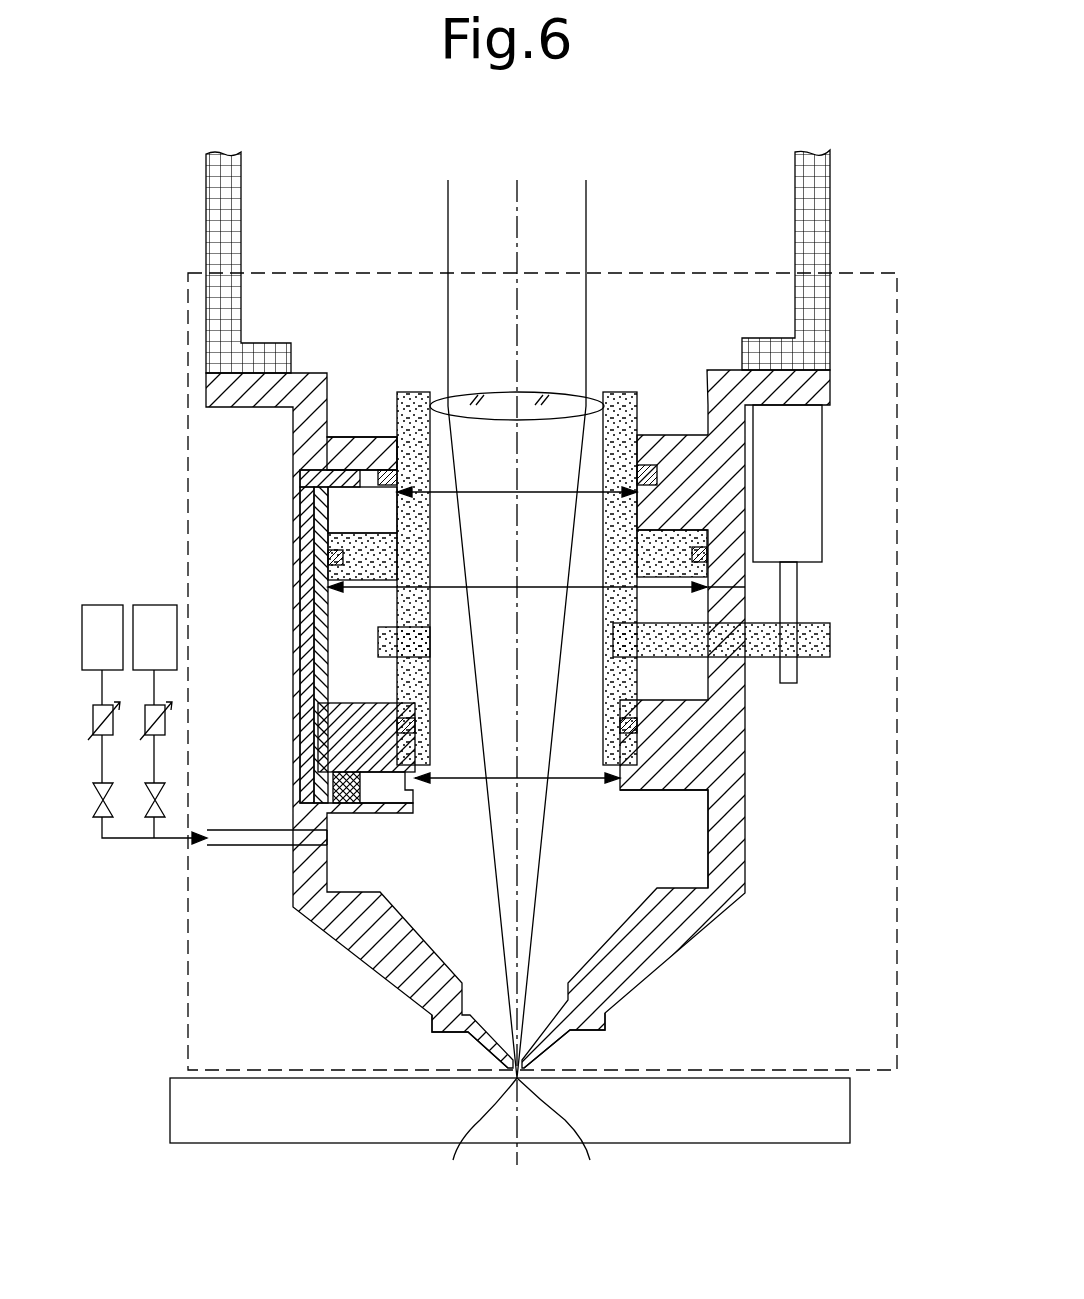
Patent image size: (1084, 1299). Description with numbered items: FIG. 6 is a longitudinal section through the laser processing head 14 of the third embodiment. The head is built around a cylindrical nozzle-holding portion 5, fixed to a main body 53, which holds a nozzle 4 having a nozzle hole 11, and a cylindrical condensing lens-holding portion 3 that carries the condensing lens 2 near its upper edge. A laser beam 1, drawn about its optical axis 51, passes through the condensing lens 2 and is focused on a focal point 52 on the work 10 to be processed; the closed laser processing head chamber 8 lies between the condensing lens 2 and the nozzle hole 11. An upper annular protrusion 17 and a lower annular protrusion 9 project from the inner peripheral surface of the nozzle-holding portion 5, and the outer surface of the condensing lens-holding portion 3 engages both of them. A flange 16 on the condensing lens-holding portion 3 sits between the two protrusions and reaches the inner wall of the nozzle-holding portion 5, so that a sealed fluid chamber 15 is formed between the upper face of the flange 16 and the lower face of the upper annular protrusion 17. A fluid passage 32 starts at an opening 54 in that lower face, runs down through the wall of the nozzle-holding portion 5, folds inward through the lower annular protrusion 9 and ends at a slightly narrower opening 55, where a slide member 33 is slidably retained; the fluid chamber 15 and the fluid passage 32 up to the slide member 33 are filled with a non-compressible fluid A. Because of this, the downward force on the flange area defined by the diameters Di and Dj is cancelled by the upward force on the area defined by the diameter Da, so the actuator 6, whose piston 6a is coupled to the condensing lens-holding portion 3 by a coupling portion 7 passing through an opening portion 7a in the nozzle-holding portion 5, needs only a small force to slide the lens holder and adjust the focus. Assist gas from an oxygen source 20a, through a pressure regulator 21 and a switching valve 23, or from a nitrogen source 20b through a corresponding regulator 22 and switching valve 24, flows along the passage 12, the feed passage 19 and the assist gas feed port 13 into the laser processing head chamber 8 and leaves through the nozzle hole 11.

The laser beam 1 is at (586, 205).
The condensing lens 2 is at (548, 395).
The condensing lens-holding portion 3 is at (618, 395).
The nozzle 4 is at (585, 1030).
The nozzle-holding portion 5 is at (727, 927).
The actuator 6 is at (800, 440).
The piston 6a is at (790, 600).
The coupling portion 7 is at (820, 640).
The opening portion 7a is at (715, 597).
The laser processing head chamber 8 is at (680, 860).
The lower annular protrusion 9 is at (360, 720).
The to-be-processed work 10 is at (672, 1125).
The nozzle hole 11 is at (477, 1137).
The passage 12 is at (154, 849).
The assist gas feed port 13 is at (322, 845).
The laser processing head 14 is at (542, 671).
The fluid chamber 15 is at (392, 534).
The flange 16 is at (672, 547).
The upper annular protrusion 17 is at (370, 440).
The feed passage 19 is at (218, 848).
The assist gas source 20a is at (100, 605).
The assist gas source 20b is at (156, 605).
The pressure regulator 21 is at (92, 722).
The flow control valve 22 is at (144, 722).
The switching valve 23 is at (92, 800).
The switching valve 24 is at (144, 800).
The fluid passage 32 is at (308, 555).
The slide member 33 is at (338, 790).
The optical axis 51 is at (520, 200).
The focal point 52 is at (565, 1137).
The main body 53 is at (815, 230).
The opening 54 is at (310, 475).
The opening 55 is at (413, 790).
The non-compressible fluid A is at (318, 600).
The inner diameter of flange pressure-receiving area Dj is at (517, 478).
The outer diameter of flange pressure-receiving area Di is at (517, 574).
The diameter of lens-holding portion pressure-receiving surface Da is at (517, 765).